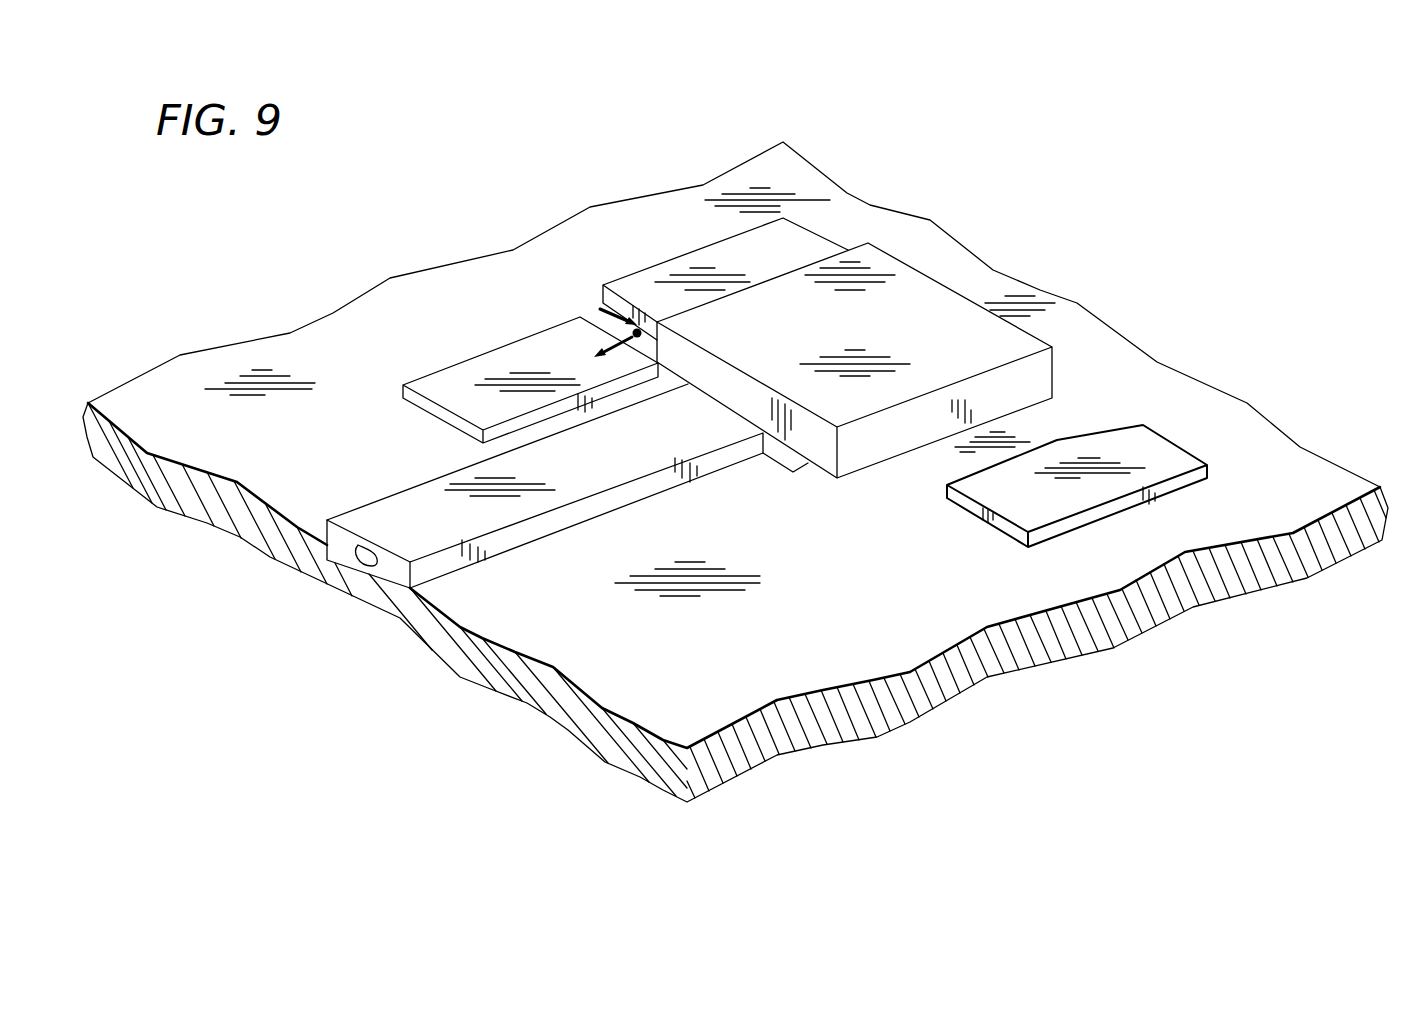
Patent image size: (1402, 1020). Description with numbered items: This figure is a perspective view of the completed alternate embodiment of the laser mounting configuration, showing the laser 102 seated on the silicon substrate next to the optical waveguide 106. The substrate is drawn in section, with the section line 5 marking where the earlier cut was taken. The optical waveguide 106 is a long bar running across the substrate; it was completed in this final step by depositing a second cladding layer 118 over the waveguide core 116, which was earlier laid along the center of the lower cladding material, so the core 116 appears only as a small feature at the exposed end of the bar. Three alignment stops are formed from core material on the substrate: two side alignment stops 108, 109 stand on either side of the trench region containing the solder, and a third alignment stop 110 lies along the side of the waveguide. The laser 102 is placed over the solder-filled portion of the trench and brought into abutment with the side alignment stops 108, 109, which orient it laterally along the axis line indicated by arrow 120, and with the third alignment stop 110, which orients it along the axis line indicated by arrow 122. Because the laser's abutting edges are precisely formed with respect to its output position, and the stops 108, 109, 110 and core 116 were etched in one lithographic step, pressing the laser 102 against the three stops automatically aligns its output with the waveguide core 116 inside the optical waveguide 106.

The section line 5- 5 is at (262, 598).
The laser 102 is at (938, 275).
The optical waveguide 106 is at (390, 484).
The alignment stop 108 is at (760, 247).
The alignment stop 109 is at (1073, 490).
The third alignment stop 110 is at (465, 378).
The waveguide core 116 is at (368, 567).
The second cladding layer 118 is at (367, 517).
The arrow 120 is at (634, 330).
The arrow 122 is at (615, 340).